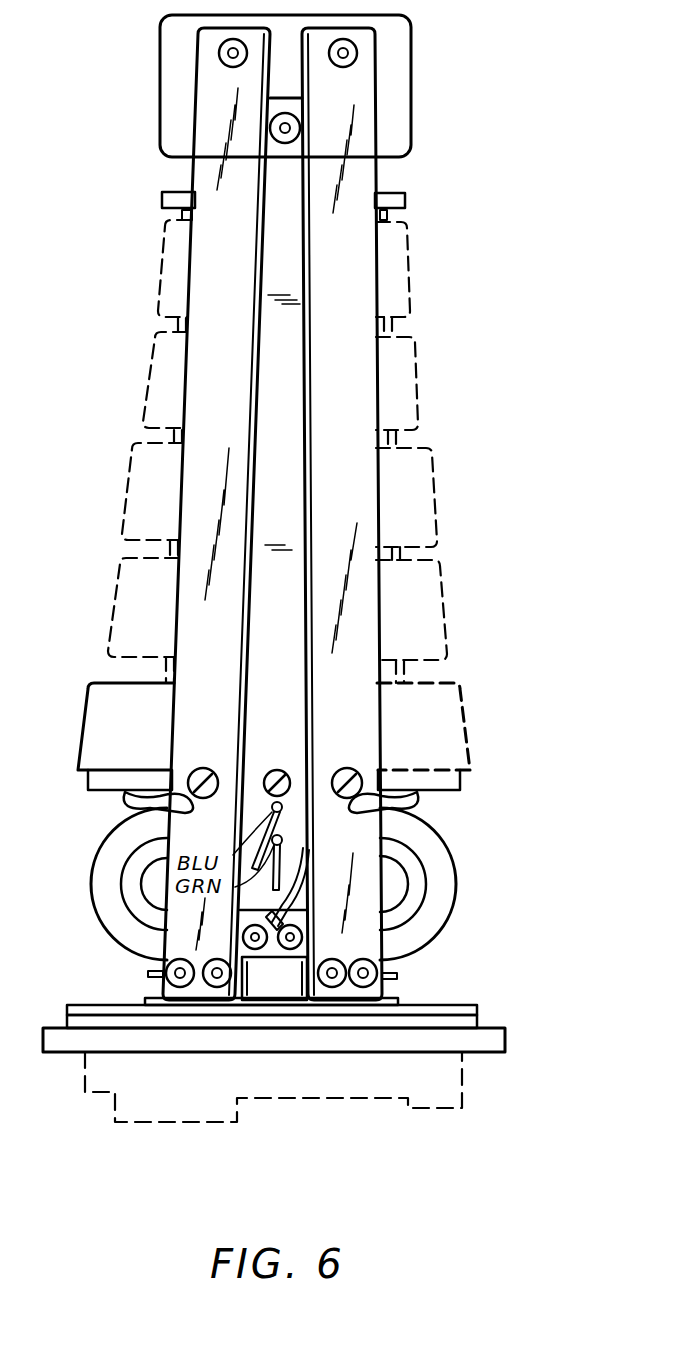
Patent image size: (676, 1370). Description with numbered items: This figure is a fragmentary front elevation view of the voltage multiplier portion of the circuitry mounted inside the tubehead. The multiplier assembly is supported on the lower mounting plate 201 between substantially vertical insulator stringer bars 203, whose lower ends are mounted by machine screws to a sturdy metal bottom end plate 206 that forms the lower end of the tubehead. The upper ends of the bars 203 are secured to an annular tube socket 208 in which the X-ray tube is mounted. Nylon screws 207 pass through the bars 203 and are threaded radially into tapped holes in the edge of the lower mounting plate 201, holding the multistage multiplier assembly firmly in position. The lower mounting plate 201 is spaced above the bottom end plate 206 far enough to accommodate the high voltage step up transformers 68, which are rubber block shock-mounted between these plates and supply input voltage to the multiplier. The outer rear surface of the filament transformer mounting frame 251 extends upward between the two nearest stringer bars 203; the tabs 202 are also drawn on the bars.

The annular tube socket 208 is at (160, 112).
The mounting tab 202 is at (403, 210).
The insulator stringer bars 203 is at (217, 297).
The filament transformer mounting frame 251 is at (283, 520).
The nylon screws 207 is at (367, 757).
The lower mounting plate 201 is at (438, 780).
The high voltage step up transformer 68 is at (110, 897).
The bottom end plate 206 is at (487, 1037).